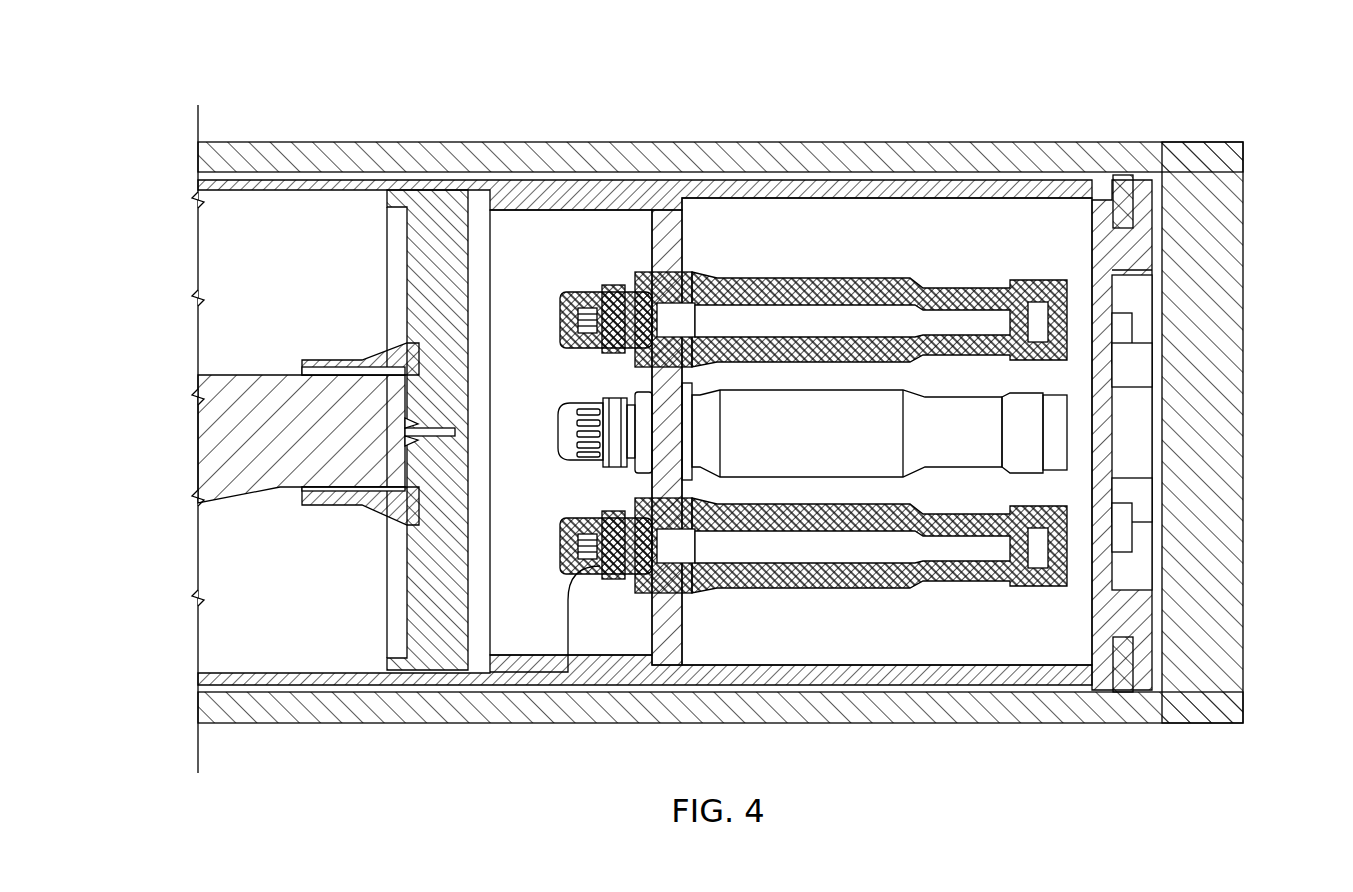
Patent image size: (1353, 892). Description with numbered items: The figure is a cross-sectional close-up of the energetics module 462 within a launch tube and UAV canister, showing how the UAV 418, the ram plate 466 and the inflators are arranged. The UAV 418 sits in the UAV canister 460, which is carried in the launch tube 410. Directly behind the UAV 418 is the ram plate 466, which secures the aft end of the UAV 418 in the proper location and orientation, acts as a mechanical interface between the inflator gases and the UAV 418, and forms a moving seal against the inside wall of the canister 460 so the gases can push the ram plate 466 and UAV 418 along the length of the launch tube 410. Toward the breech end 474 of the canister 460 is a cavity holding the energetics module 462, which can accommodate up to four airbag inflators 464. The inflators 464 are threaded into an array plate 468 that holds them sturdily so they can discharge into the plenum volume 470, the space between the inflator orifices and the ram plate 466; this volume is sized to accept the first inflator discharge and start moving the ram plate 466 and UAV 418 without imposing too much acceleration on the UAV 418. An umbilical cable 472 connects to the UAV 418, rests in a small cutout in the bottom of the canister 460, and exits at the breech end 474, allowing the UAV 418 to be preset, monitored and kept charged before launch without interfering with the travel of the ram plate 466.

The launch tube 410 is at (272, 150).
The UAV 418 is at (218, 440).
The UAV canister 460 is at (205, 182).
The energetics module 462 is at (788, 228).
The airbag inflators 464 is at (1067, 545).
The ram plate 466 is at (440, 220).
The array plate 468 is at (665, 235).
The plenum volume 470 is at (553, 245).
The umbilical cable 472 is at (323, 673).
The breech end 474 is at (1205, 597).